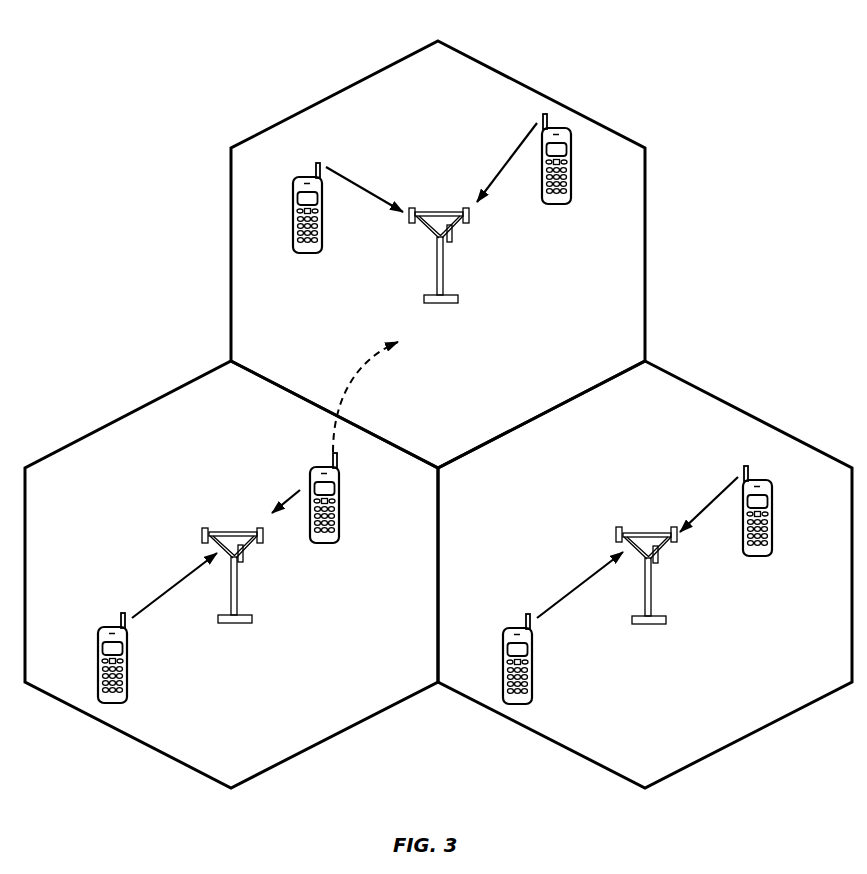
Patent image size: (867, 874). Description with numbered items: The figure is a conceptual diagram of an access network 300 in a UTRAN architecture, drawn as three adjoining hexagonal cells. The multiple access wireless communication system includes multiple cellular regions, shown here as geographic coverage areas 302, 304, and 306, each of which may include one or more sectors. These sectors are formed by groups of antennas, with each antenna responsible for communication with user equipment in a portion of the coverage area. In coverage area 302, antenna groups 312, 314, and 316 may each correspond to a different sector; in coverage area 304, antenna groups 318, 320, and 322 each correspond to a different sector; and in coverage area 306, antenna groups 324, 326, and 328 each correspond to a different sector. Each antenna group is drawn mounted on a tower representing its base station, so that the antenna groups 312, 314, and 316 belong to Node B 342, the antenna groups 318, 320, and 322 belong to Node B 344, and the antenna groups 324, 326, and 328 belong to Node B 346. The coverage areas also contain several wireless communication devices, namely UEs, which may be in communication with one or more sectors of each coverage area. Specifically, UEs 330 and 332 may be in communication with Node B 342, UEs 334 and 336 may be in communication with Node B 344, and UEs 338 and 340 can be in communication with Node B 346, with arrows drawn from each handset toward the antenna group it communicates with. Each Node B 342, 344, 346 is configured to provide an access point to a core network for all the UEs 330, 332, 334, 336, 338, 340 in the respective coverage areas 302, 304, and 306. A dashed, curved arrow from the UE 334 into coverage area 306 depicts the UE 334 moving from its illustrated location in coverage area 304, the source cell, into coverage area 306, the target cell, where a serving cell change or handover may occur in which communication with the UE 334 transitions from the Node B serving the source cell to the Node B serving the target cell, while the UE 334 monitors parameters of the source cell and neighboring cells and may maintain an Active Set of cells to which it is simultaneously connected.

The access network 300 is at (438, 401).
The geographic coverage area 302 is at (752, 416).
The geographic coverage area 304 is at (103, 427).
The geographic coverage area 306 is at (524, 85).
The antenna group 312 is at (617, 530).
The antenna group 314 is at (658, 560).
The antenna group 316 is at (676, 541).
The antenna group 318 is at (243, 560).
The antenna group 320 is at (262, 541).
The antenna group 322 is at (202, 530).
The antenna group 324 is at (409, 224).
The antenna group 326 is at (452, 238).
The antenna group 328 is at (470, 215).
The UE 330 is at (772, 505).
The UE 332 is at (503, 652).
The UE 334 is at (341, 492).
The UE 336 is at (98, 652).
The UE 338 is at (305, 253).
The UE 340 is at (560, 207).
The Node B 342 is at (647, 554).
The Node B 344 is at (233, 553).
The Node B 346 is at (440, 234).